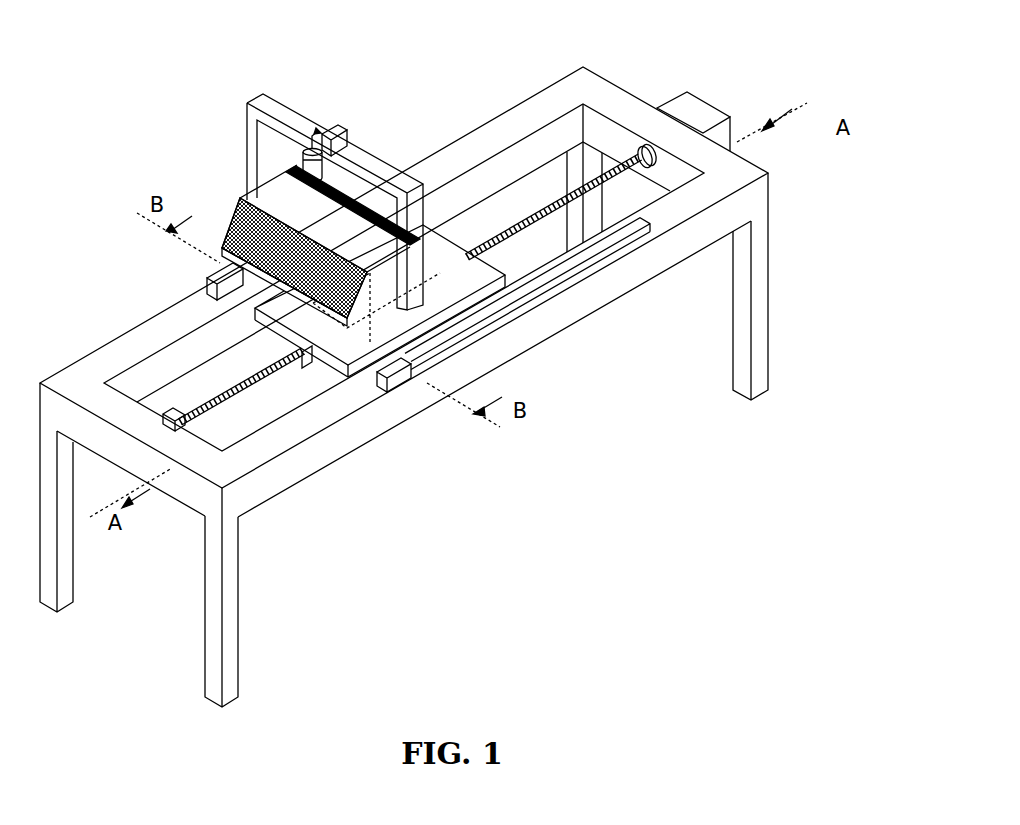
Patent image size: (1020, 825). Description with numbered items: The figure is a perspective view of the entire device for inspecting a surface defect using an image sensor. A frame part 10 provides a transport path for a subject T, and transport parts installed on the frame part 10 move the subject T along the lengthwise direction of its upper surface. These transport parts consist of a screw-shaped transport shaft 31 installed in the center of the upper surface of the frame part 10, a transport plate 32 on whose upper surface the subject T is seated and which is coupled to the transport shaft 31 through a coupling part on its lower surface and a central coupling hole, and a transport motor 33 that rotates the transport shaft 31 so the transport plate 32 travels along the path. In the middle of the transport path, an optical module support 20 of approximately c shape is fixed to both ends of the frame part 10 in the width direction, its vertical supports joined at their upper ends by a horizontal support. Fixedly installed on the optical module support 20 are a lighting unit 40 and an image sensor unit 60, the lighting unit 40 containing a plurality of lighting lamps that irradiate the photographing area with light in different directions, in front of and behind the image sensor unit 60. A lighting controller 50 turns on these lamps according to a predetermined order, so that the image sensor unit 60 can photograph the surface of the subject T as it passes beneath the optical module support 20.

The frame part 10 is at (755, 203).
The optical module support 20 is at (250, 125).
The transport shaft 31 is at (548, 210).
The transport plate 32 is at (482, 288).
The transport motor 33 is at (700, 112).
The lighting unit 40 is at (219, 200).
The lighting controller 50 is at (427, 388).
The image sensor unit 60 is at (303, 138).
The subject T is at (340, 378).